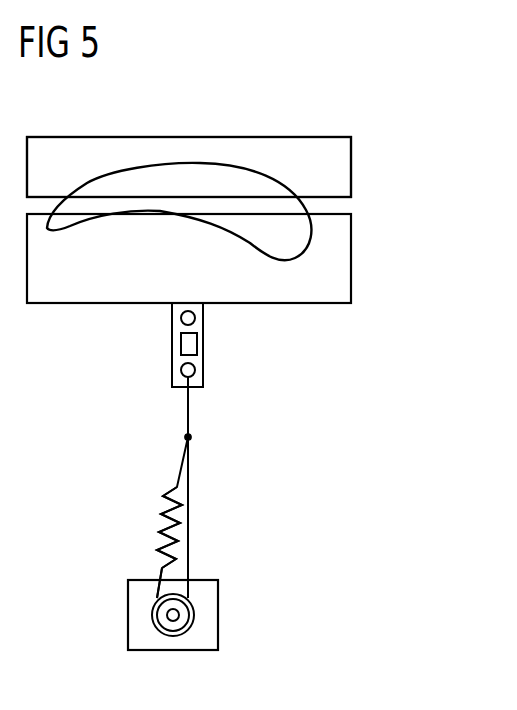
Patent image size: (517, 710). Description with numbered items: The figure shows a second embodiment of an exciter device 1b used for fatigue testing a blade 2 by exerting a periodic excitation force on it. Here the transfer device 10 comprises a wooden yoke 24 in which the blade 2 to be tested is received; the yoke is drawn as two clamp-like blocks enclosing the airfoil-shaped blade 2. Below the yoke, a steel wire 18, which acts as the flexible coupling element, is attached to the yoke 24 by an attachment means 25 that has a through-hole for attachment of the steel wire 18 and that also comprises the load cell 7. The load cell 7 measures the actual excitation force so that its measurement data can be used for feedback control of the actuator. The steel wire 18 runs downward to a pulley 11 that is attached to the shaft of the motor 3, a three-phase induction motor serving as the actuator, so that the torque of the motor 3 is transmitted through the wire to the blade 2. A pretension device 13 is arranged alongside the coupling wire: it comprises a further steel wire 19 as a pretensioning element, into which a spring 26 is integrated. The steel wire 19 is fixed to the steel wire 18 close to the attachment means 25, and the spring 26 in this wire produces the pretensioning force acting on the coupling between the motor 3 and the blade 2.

The transfer device 10 is at (334, 111).
The wooden yoke 24 is at (269, 137).
The blade 2 is at (209, 175).
The load cell 7 is at (177, 350).
The attachment means 25 is at (172, 318).
The steel wire 18 is at (188, 550).
The pretension device 13 is at (133, 491).
The spring 26 is at (160, 530).
The steel wire 19 is at (160, 569).
The motor 3 is at (128, 617).
The pulley 11 is at (182, 620).
The exciter device 1b is at (284, 453).